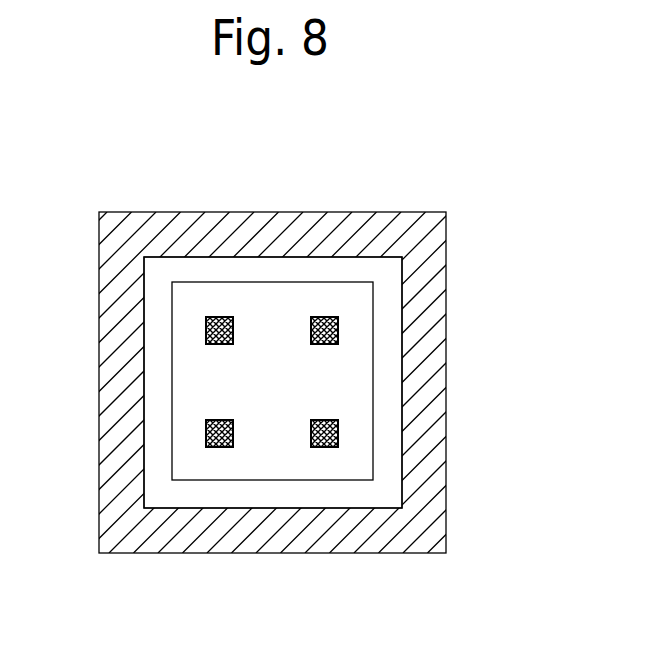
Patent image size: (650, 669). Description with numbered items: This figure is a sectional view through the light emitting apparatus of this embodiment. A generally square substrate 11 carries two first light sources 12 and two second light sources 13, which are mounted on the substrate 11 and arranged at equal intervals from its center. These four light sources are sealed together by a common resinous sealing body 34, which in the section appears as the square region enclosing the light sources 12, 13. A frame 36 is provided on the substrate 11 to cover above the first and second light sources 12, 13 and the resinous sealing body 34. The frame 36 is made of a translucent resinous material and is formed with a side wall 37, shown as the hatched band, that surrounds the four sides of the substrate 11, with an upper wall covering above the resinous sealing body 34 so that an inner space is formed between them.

The substrate 11 is at (392, 497).
The first light source 12 is at (206, 328).
The second light source 13 is at (338, 325).
The resinous sealing body 34 is at (270, 470).
The frame 36 is at (358, 210).
The side wall 37 is at (245, 210).